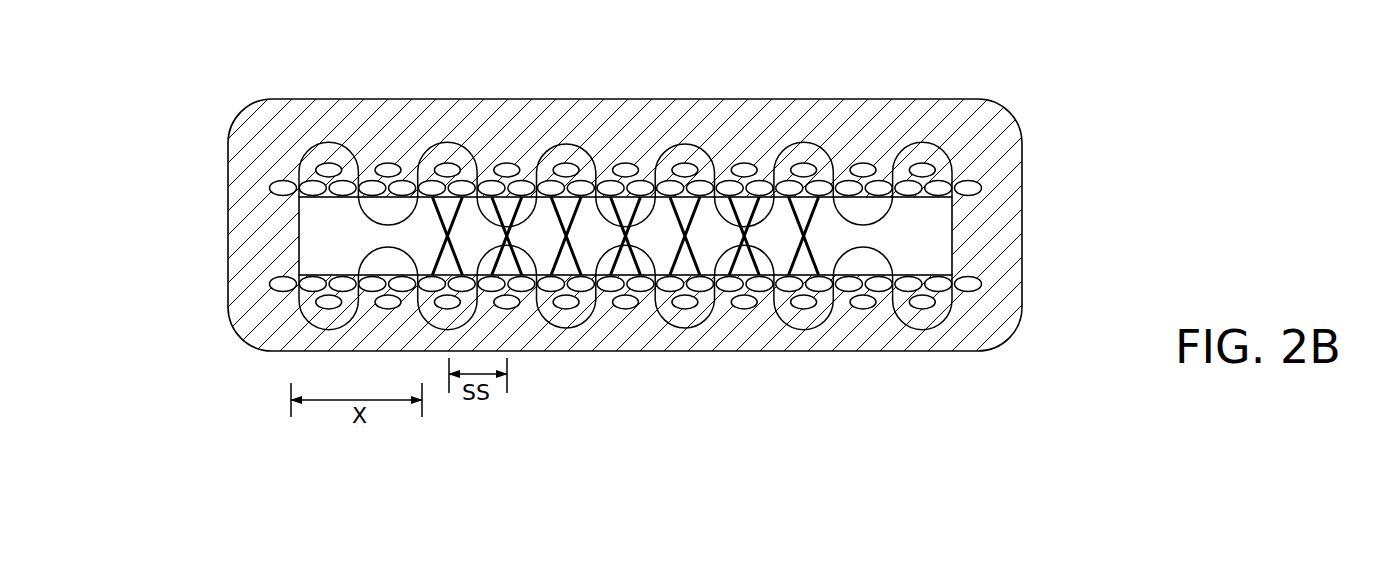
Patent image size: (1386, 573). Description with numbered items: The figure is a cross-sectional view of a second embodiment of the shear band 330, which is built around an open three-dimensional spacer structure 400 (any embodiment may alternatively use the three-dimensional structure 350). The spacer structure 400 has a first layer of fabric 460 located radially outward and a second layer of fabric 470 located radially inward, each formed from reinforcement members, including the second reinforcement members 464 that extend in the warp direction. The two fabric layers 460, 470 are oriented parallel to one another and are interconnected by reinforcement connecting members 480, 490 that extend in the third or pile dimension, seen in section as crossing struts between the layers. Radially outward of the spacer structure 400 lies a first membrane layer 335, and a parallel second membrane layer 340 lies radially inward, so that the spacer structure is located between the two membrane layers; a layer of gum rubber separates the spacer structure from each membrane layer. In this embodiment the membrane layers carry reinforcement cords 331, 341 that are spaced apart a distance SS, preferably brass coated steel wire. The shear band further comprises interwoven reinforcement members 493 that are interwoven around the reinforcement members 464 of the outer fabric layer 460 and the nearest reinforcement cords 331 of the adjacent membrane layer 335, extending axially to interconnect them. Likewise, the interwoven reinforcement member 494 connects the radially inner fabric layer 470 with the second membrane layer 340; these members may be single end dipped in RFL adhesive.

The shear band 330 is at (359, 76).
The reinforcement cords 331 is at (395, 164).
The first membrane layer 335 is at (923, 162).
The second membrane layer 340 is at (874, 314).
The reinforcement cords 341 is at (617, 310).
The three-dimensional spacer structure 400 is at (625, 194).
The three-dimensional structure 350 is at (642, 147).
The first layer of fabric 460 is at (290, 203).
The second reinforcement members 464 is at (292, 186).
The second layer of fabric 470 is at (981, 308).
The reinforcement connecting member 480 is at (756, 236).
The reinforcement connecting member 490 is at (795, 262).
The interwoven reinforcement members 493 is at (818, 145).
The interwoven reinforcement member 494 is at (828, 322).